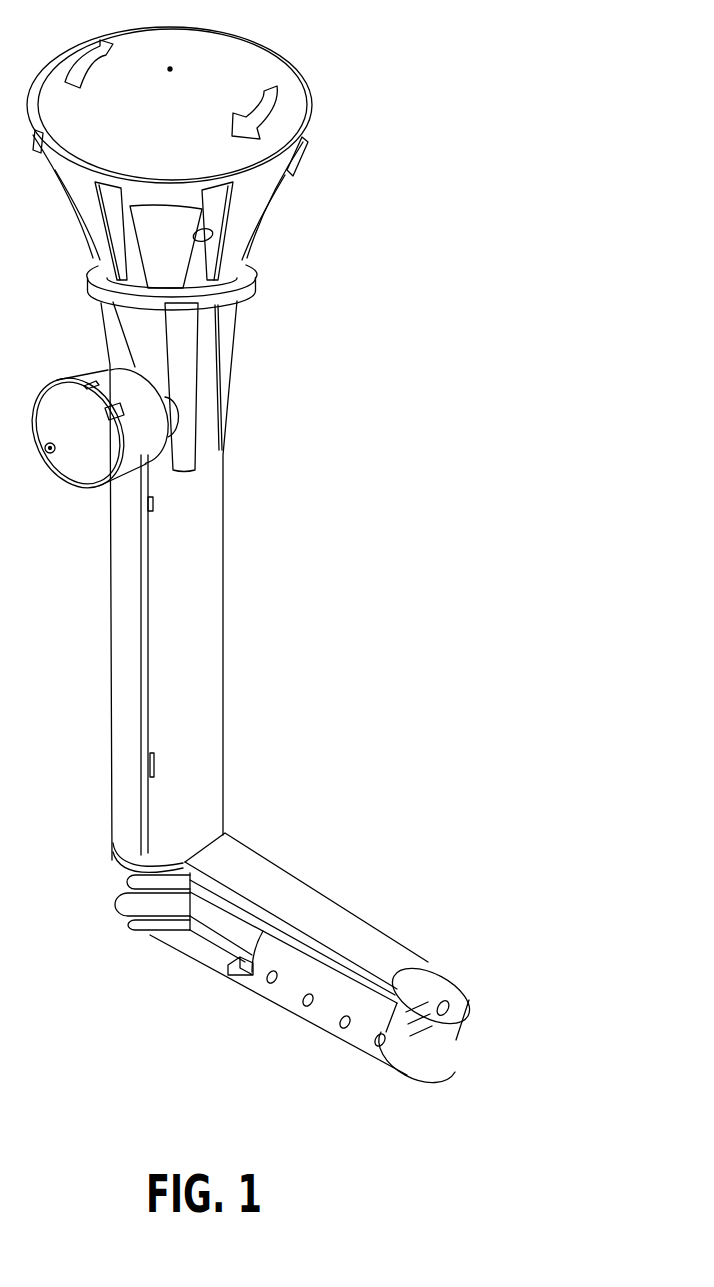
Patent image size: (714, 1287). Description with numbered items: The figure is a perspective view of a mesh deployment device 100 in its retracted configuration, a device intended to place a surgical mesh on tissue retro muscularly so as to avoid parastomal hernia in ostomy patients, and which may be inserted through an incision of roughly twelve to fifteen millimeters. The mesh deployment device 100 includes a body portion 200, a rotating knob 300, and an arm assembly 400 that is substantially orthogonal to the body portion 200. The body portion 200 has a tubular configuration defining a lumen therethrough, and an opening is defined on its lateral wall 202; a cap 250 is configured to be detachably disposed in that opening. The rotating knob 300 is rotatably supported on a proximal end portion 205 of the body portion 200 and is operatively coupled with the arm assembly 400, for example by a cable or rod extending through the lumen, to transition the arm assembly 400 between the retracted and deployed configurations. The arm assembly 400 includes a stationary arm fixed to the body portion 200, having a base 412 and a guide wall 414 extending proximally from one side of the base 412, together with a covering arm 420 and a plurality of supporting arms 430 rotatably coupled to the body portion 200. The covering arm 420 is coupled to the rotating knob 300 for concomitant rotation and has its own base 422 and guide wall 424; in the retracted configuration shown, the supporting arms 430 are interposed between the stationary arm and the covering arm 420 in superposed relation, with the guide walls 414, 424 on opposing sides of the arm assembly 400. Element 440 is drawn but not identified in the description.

The mesh deployment device 100 is at (276, 575).
The rotating knob 300 is at (200, 155).
The proximal end portion 205 is at (206, 276).
The body portion 200 is at (188, 586).
The lateral wall 202 is at (113, 655).
The cap 250 is at (99, 451).
The arm assembly 400 is at (317, 965).
The covering arm 420 is at (345, 921).
The base 422 is at (444, 970).
The guide wall 424 is at (471, 985).
The base 412 is at (442, 1074).
The guide wall 414 is at (278, 1007).
The supporting arms 430 is at (163, 941).
The latch tab 440 is at (222, 1006).